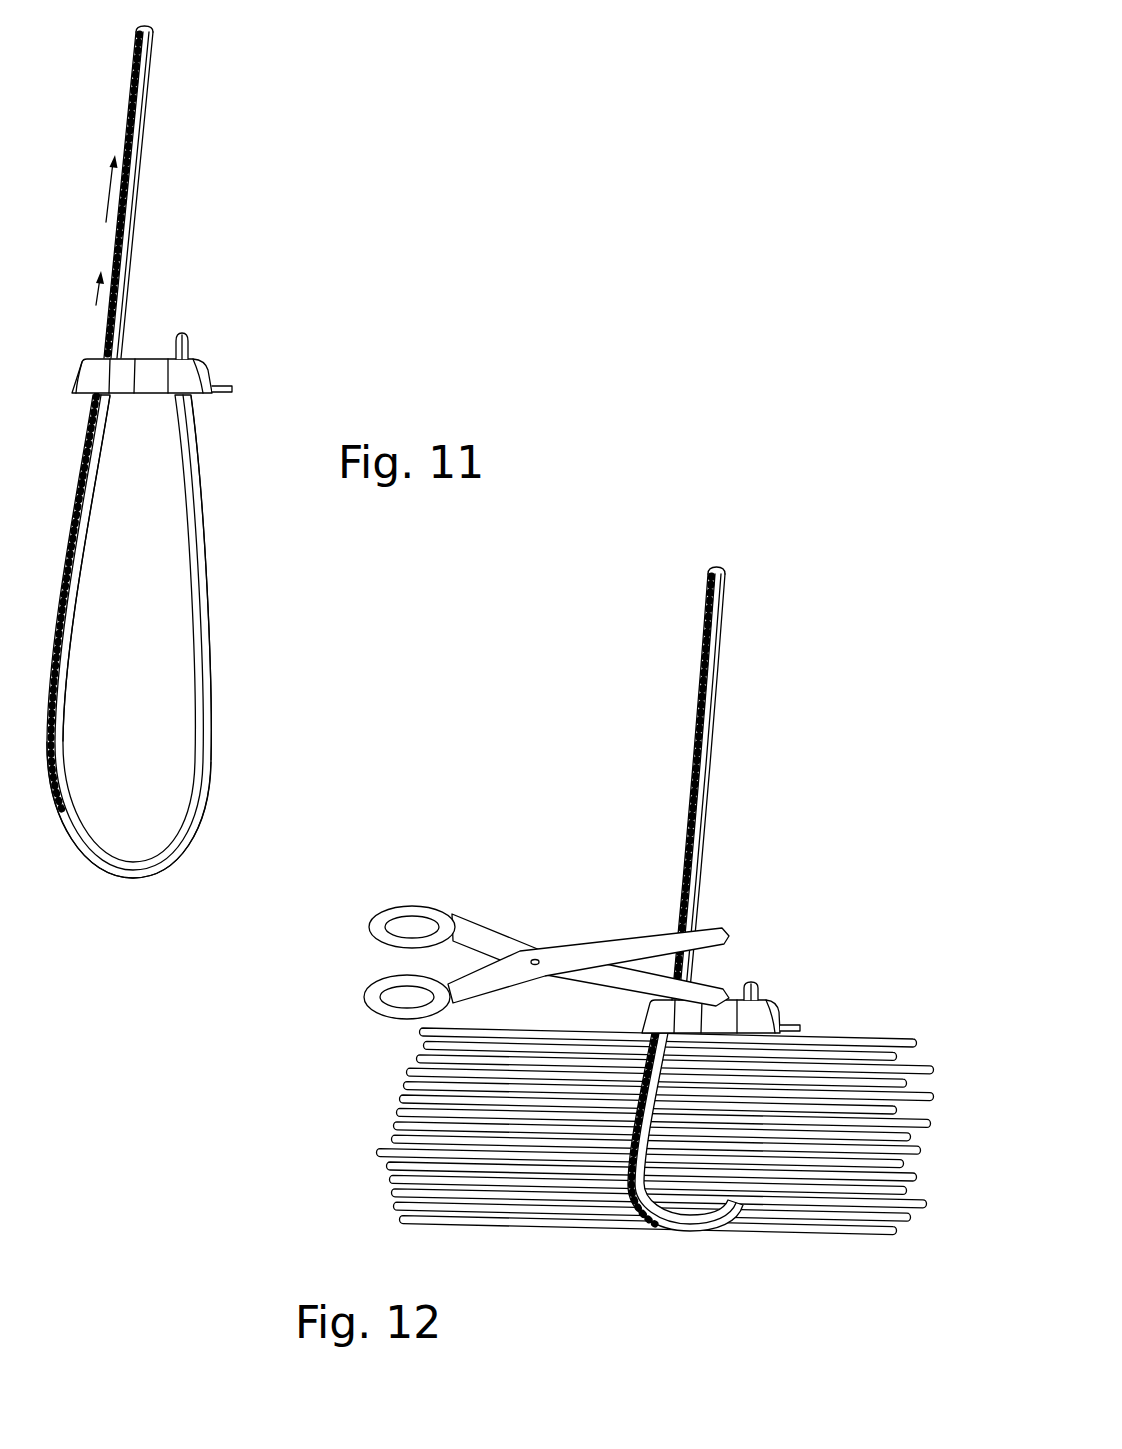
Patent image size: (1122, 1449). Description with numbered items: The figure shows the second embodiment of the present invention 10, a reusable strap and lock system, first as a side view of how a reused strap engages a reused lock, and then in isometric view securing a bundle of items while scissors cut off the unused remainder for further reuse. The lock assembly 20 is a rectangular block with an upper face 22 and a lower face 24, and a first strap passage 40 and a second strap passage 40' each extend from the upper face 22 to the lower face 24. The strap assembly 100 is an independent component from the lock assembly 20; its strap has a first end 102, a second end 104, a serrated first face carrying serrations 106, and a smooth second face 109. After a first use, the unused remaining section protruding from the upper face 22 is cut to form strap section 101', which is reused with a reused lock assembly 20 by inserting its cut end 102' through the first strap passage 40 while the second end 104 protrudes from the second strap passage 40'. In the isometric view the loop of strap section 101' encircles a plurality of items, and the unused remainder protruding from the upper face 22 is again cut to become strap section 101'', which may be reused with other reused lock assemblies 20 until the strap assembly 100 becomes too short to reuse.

In FIG. 11, the present invention 10 is at (247, 100).
In FIG. 12, the present invention 10 is at (850, 755).
In FIG. 11, the lock assembly 20 is at (222, 358).
In FIG. 12, the lock assembly 20 is at (775, 985).
In FIG. 11, the upper face 22 is at (142, 358).
In FIG. 12, the upper face 22 is at (742, 980).
In FIG. 11, the lower face 24 is at (148, 395).
In FIG. 11, the first strap passage 40 is at (235, 331).
In FIG. 11, the second strap passage 40' is at (70, 255).
In FIG. 11, the strap assembly 100 is at (225, 805).
In FIG. 12, the strap assembly 100 is at (728, 1234).
In FIG. 11, the strap section 101' is at (114, 568).
In FIG. 12, the strap section 101' is at (645, 1154).
In FIG. 12, the strap section 101'' is at (657, 787).
In FIG. 11, the first end 102 is at (241, 446).
In FIG. 12, the first end 102 is at (848, 989).
In FIG. 11, the cut end 102' is at (231, 279).
In FIG. 12, the cut end 102' is at (823, 904).
In FIG. 11, the second end 104 is at (141, 26).
In FIG. 12, the second end 104 is at (716, 562).
In FIG. 11, the serrations 106 is at (92, 426).
In FIG. 12, the serrations 106 is at (710, 614).
In FIG. 11, the second face 109 is at (190, 573).
In FIG. 12, the second face 109 is at (755, 980).